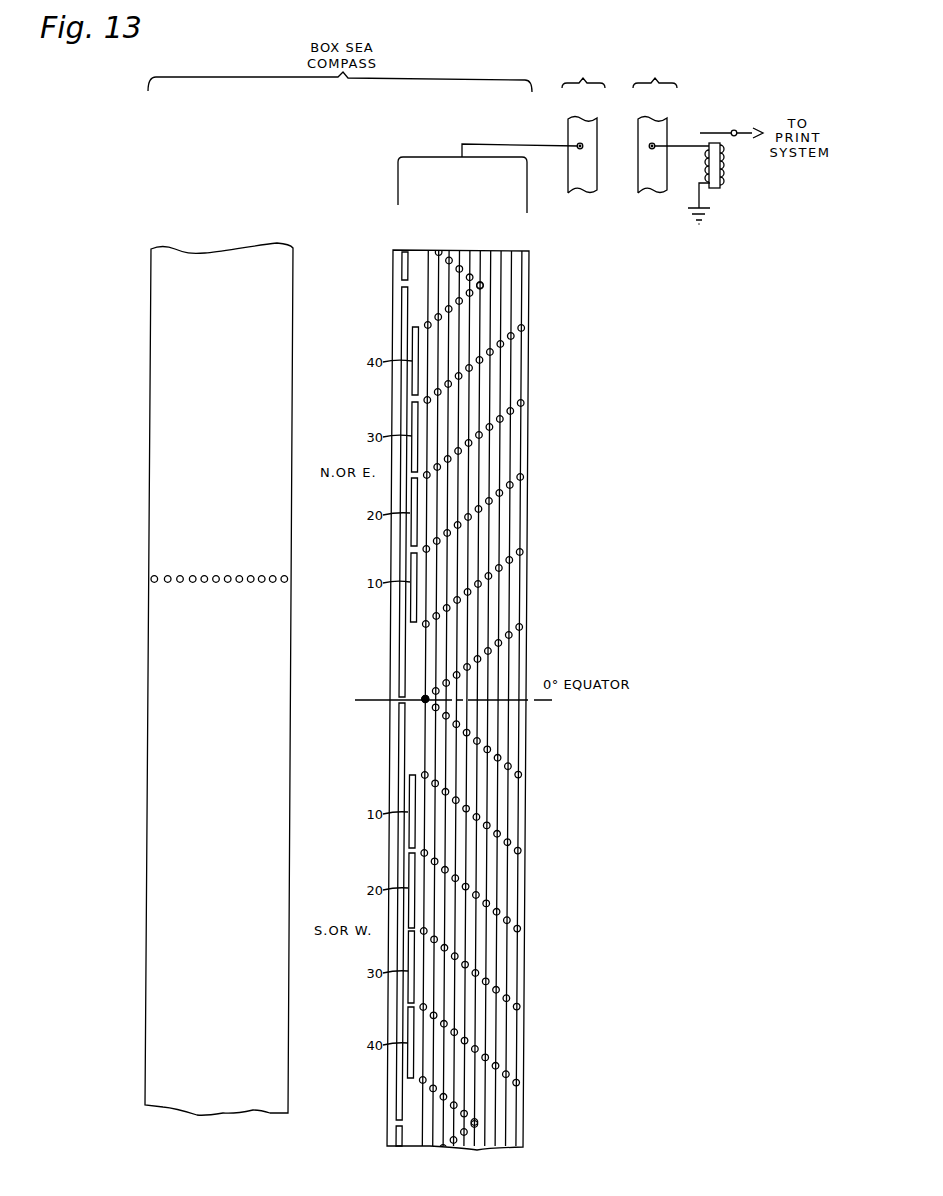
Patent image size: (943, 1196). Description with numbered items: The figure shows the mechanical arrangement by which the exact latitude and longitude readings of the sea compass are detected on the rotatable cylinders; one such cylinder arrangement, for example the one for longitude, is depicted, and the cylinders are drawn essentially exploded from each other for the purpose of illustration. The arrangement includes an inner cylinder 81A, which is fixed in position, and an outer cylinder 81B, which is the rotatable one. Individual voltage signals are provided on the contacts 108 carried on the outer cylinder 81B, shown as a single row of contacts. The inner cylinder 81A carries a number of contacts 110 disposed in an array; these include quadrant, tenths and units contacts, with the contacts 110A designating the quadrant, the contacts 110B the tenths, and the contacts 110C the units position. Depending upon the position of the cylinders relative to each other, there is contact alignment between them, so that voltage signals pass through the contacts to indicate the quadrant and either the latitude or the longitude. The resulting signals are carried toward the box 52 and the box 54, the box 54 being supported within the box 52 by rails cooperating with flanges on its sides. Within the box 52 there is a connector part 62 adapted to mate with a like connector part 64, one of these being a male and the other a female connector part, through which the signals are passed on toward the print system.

The box 52 is at (583, 119).
The box 54 is at (655, 119).
The connector part 62 is at (588, 193).
The connector part 64 is at (650, 193).
The inner cylinder 81A is at (541, 603).
The outer cylinder 81B is at (297, 566).
The contacts 108 is at (165, 575).
The contacts 110 is at (411, 613).
The quadrant contacts 110A is at (398, 657).
The tenths contacts 110B is at (413, 776).
The units contacts 110C is at (527, 559).